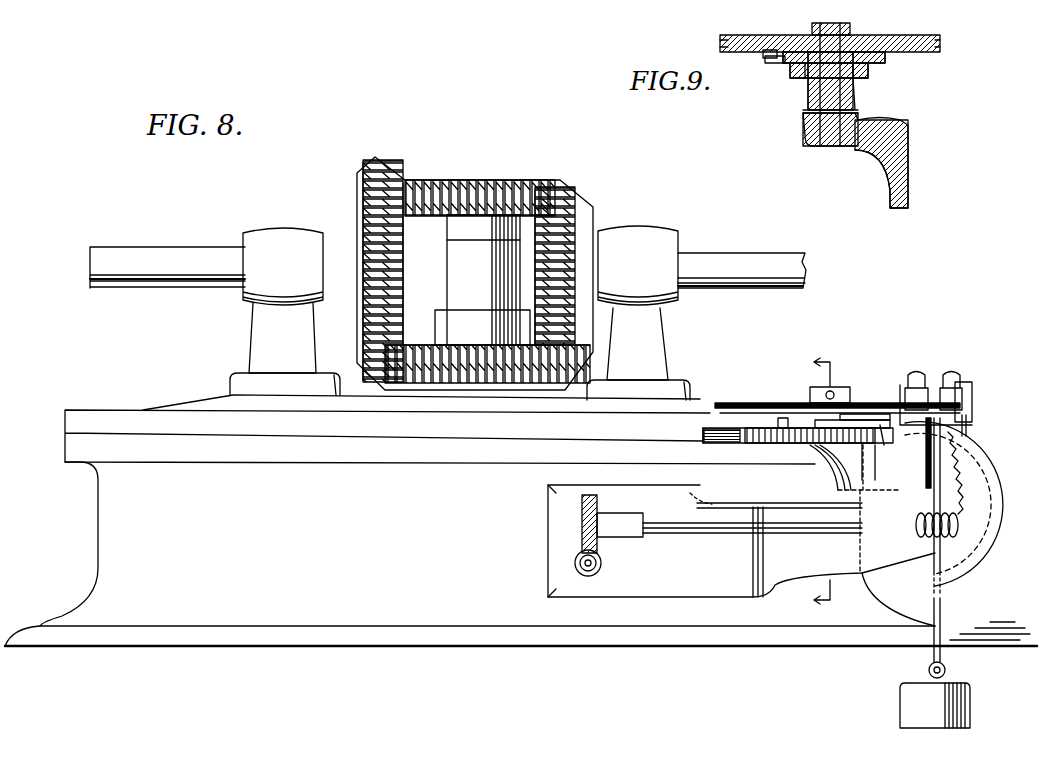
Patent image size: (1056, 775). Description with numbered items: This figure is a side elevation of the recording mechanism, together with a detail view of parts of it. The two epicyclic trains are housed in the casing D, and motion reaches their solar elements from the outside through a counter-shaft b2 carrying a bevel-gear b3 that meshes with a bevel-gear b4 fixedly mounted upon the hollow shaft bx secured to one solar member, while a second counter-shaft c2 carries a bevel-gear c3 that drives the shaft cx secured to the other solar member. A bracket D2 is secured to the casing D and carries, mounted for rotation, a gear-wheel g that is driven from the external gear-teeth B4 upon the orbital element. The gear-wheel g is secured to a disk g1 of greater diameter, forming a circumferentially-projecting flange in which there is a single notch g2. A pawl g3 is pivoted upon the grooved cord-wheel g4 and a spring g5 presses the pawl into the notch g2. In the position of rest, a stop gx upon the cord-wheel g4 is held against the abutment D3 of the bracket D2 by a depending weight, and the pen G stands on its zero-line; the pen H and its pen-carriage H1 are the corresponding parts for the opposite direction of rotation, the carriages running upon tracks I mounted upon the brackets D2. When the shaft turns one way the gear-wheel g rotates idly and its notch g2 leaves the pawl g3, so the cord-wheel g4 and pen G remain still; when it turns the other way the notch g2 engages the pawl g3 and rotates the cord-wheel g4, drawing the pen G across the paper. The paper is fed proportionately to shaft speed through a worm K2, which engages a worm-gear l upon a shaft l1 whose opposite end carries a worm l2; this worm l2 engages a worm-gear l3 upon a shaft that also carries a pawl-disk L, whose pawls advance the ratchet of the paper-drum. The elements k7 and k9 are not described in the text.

In FIG. 8, the casing D is at (521, 520).
In FIG. 8, the bracket D2 is at (741, 541).
In FIG. 9, the bracket D2 is at (910, 154).
In FIG. 8, the abutment D3 is at (858, 467).
In FIG. 8, the counter-shaft b2 is at (174, 258).
In FIG. 8, the bevel-gear b3 is at (360, 212).
In FIG. 8, the bevel-gear b4 is at (485, 385).
In FIG. 8, the hollow shaft bx is at (482, 280).
In FIG. 8, the counter-shaft c2 is at (748, 262).
In FIG. 8, the bevel-gear c3 is at (578, 212).
In FIG. 8, the shaft cx is at (490, 180).
In FIG. 8, the gear-wheel g is at (867, 460).
In FIG. 9, the gear-wheel g is at (870, 74).
In FIG. 8, the disk g1 is at (850, 426).
In FIG. 9, the disk g1 is at (887, 58).
In FIG. 8, the notch g2 is at (803, 442).
In FIG. 8, the pawl g3 is at (803, 420).
In FIG. 9, the pawl g3 is at (775, 63).
In FIG. 8, the cord-wheel g4 is at (718, 405).
In FIG. 9, the cord-wheel g4 is at (944, 44).
In FIG. 8, the spring g5 is at (842, 418).
In FIG. 9, the spring g5 is at (763, 56).
In FIG. 8, the stop gx is at (886, 442).
In FIG. 8, the external gear-teeth B4 is at (717, 449).
In FIG. 8, the pen H is at (916, 378).
In FIG. 8, the pen G is at (951, 378).
In FIG. 8, the pen-carriage H1 is at (962, 386).
In FIG. 8, the tracks I is at (970, 422).
In FIG. 8, the pawl-disk L is at (985, 510).
In FIG. 8, the worm-gear l is at (580, 530).
In FIG. 8, the shaft l1 is at (732, 530).
In FIG. 8, the worm l2 is at (958, 538).
In FIG. 8, the worm-gear l3 is at (962, 480).
In FIG. 8, the worm K2 is at (600, 570).
In FIG. 8, the cord k7 is at (942, 614).
In FIG. 8, the weight k9 is at (935, 695).